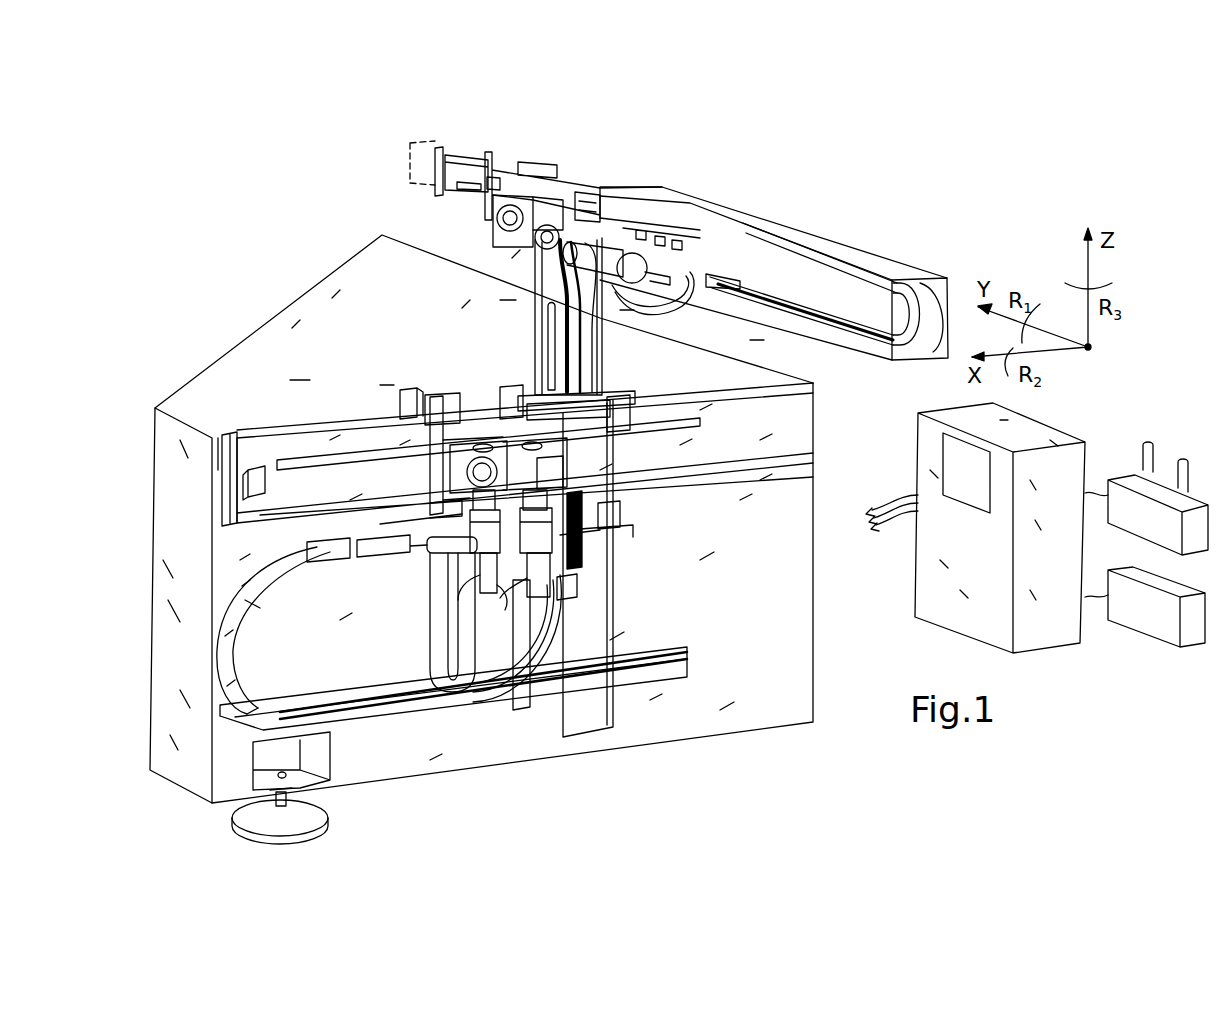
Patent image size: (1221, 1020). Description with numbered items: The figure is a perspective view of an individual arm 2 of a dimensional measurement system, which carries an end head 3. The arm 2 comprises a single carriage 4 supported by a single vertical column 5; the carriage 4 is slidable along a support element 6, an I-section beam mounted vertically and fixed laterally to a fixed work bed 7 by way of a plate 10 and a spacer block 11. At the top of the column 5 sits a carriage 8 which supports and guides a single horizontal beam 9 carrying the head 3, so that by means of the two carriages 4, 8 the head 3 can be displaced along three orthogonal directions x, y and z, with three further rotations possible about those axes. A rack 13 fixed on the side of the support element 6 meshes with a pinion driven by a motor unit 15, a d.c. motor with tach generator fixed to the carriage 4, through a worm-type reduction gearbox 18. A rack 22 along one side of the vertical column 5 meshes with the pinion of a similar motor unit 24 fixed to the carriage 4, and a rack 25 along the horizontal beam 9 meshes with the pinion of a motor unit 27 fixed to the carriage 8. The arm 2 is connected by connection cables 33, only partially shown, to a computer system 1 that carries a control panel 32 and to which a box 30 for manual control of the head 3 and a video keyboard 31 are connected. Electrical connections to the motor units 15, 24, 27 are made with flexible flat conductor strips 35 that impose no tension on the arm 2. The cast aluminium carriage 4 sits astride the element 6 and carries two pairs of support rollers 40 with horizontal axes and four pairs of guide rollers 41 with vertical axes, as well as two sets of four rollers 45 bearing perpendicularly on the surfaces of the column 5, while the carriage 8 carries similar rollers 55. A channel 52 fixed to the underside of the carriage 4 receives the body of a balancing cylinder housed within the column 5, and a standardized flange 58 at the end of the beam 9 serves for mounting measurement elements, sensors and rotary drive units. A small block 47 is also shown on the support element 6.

The computer system 1 is at (1052, 630).
The arm 2 is at (716, 190).
The end head 3 is at (440, 146).
The carriage 4 is at (470, 400).
The vertical column 5 is at (605, 372).
The support element 6 is at (300, 432).
The fixed work bed 7 is at (170, 450).
The carriage 8 is at (582, 176).
The horizontal column or beam 9 is at (466, 200).
The plate 10 is at (222, 440).
The spacer block 11 is at (232, 432).
The rack 13 is at (335, 460).
The motor unit 15 is at (540, 612).
The reduction gearbox 18 is at (490, 450).
The rack 22 is at (548, 352).
The motor unit 24 is at (590, 545).
The rack 25 is at (470, 185).
The motor unit 27 is at (645, 297).
The box 30 is at (1158, 520).
The video keyboard 31 is at (1152, 614).
The control panel 32 is at (958, 480).
The connection cables 33 is at (892, 528).
The flat conductor strips 35 is at (262, 622).
The support rollers 40 is at (410, 390).
The guide rollers 41 is at (430, 418).
The rollers 45 is at (507, 400).
The stop block 47 is at (250, 482).
The channel 52 is at (598, 712).
The rollers 55 is at (495, 180).
The standardized flange 58 is at (448, 152).